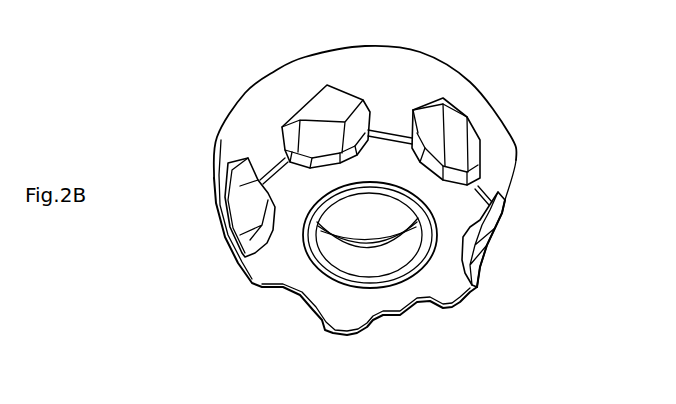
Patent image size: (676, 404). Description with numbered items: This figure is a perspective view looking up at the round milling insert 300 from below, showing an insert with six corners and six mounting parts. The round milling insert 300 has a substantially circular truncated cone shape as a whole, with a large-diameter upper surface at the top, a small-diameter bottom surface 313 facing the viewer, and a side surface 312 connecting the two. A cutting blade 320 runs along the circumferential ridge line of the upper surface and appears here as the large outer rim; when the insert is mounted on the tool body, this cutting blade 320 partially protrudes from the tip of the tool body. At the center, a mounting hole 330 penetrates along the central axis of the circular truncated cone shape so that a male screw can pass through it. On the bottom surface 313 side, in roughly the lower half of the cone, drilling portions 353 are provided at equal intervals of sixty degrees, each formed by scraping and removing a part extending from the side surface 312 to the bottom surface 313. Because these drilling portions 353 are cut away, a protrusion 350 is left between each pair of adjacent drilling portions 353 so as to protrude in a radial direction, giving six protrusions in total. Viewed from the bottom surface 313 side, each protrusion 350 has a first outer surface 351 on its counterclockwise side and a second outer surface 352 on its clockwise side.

The round milling insert 300 is at (233, 29).
The side surface 312 is at (500, 150).
The bottom surface 313 is at (398, 312).
The cutting blade 320 is at (482, 95).
The mounting hole 330 is at (368, 264).
The protrusion 350 is at (392, 125).
The first outer surface 351 is at (352, 100).
The second outer surface 352 is at (422, 112).
The drilling portion 353 is at (320, 108).